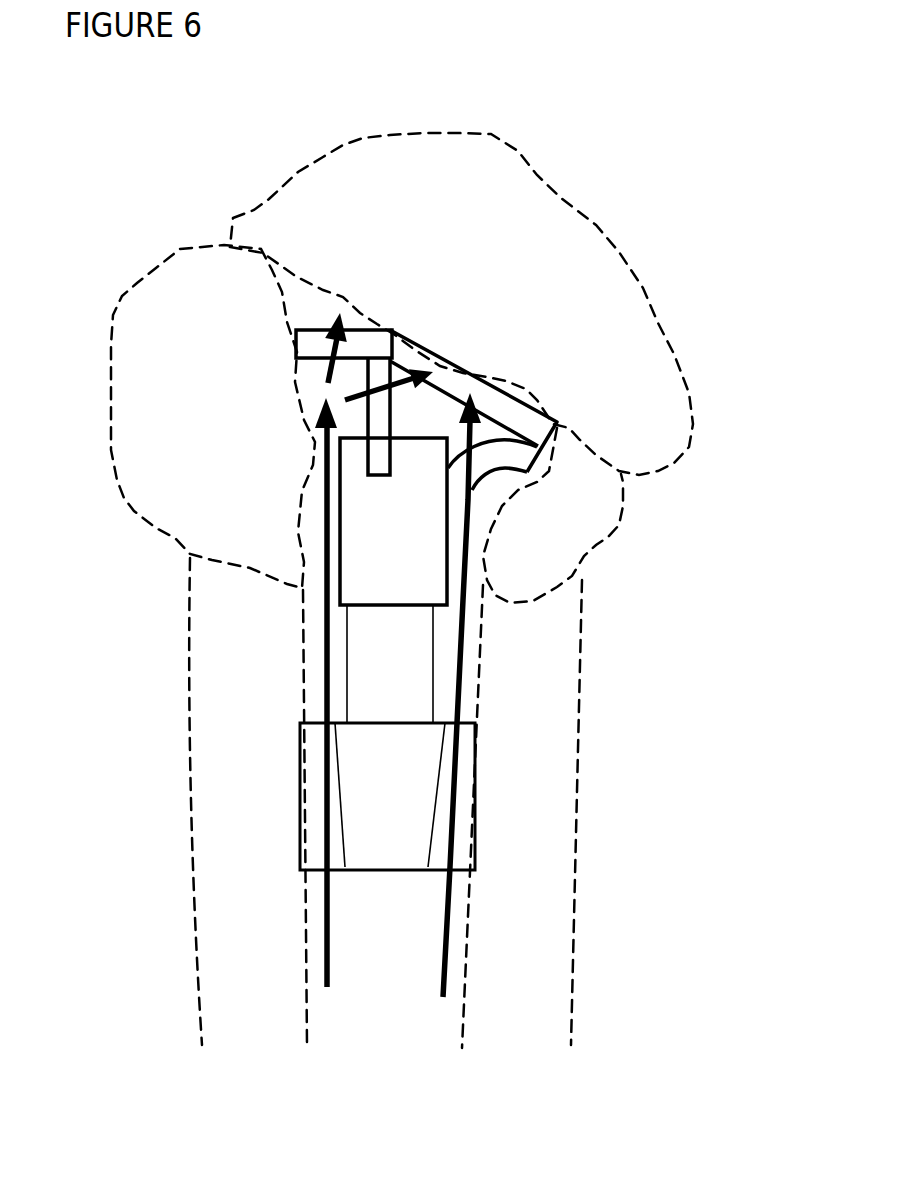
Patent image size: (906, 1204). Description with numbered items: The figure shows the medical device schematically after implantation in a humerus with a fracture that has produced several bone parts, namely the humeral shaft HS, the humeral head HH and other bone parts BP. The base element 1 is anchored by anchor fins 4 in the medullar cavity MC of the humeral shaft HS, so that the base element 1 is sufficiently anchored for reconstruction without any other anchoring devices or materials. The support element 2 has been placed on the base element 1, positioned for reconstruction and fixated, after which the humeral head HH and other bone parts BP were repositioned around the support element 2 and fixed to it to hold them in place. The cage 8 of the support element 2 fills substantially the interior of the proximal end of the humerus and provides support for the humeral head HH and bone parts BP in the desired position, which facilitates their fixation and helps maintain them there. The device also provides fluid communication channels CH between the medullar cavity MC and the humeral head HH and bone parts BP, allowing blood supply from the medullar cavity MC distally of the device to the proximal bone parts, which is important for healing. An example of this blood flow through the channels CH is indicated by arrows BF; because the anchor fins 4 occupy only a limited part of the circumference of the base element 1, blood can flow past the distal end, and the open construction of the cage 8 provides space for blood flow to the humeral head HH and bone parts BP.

The base element 1 is at (408, 697).
The support element 2 is at (408, 522).
The anchor fins 4 is at (318, 857).
The cage 8 is at (392, 414).
The humeral head HH is at (557, 252).
The bone parts BP is at (197, 355).
The humeral shaft HS is at (545, 940).
The medullar cavity MC is at (417, 946).
The fluid communication channels CH is at (318, 627).
The blood flow arrows BF is at (392, 383).